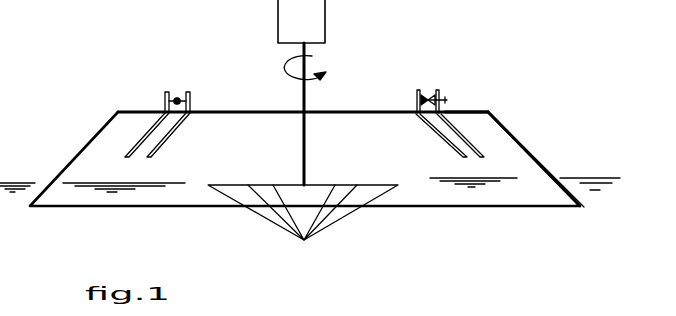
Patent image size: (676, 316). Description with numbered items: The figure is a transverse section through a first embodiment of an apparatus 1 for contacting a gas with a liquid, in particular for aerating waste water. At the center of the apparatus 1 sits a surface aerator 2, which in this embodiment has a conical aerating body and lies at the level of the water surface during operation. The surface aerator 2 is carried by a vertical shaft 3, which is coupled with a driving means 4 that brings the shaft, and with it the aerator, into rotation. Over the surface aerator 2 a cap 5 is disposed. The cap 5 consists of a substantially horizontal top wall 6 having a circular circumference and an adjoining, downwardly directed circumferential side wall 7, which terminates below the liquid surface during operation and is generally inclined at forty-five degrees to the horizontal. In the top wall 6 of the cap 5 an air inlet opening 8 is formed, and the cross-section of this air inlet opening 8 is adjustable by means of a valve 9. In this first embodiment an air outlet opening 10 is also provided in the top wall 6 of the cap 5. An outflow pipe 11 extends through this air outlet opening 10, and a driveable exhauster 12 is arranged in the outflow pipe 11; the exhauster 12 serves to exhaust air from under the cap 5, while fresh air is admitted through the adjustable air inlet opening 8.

The apparatus 1 is at (118, 94).
The surface aerator 2 is at (343, 210).
The vertical shaft 3 is at (305, 73).
The driving means 4 is at (318, 12).
The cap 5 is at (468, 104).
The top wall 6 is at (248, 111).
The side wall 7 is at (510, 135).
The air inlet opening 8 is at (408, 110).
The valve 9 is at (428, 98).
The air outlet opening 10 is at (160, 105).
The outflow pipe 11 is at (175, 98).
The driveable exhauster 12 is at (181, 100).